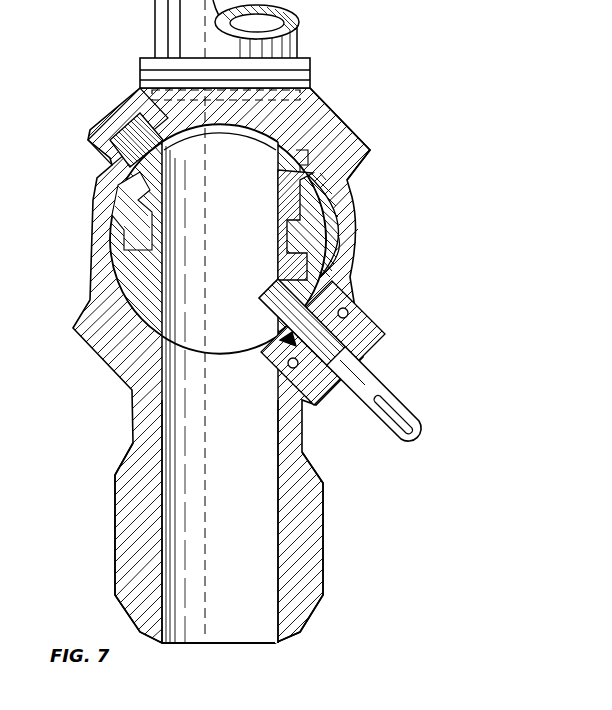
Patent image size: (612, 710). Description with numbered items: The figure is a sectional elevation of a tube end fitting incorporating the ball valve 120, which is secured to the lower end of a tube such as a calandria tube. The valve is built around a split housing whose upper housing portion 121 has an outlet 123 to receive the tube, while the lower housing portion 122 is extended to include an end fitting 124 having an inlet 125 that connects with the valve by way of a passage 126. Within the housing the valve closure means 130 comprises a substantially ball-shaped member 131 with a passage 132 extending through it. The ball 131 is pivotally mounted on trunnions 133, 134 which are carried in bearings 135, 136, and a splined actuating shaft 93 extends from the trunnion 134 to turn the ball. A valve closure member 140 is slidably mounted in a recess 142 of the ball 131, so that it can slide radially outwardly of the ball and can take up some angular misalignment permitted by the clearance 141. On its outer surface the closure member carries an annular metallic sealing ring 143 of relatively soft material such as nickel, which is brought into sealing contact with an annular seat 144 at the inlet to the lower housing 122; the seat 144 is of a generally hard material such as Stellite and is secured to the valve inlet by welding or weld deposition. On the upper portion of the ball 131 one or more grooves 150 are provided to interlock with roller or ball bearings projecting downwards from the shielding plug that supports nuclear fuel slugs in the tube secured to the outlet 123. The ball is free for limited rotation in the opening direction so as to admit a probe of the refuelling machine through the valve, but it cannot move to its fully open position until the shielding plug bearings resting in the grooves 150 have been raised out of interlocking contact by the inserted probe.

The splined actuating shaft 93 is at (413, 402).
The ball valve 120 is at (380, 229).
The upper housing portion 121 is at (288, 147).
The lower housing portion 122 is at (362, 143).
The outlet 123 is at (302, 66).
The end fitting 124 is at (332, 540).
The inlet 125 is at (232, 641).
The passage 126 is at (237, 564).
The valve closure means 130 is at (249, 96).
The ball-shaped member 131 is at (140, 273).
The passage 132 is at (237, 198).
The trunnion 133 is at (110, 121).
The trunnion 134 is at (360, 329).
The bearing 135 is at (113, 157).
The bearing 136 is at (348, 313).
The valve closure member 140 is at (327, 223).
The clearance 141 is at (300, 168).
The recess 142 is at (290, 210).
The annular metallic sealing ring 143 is at (343, 283).
The seat 144 is at (280, 342).
The grooves 150 is at (113, 243).